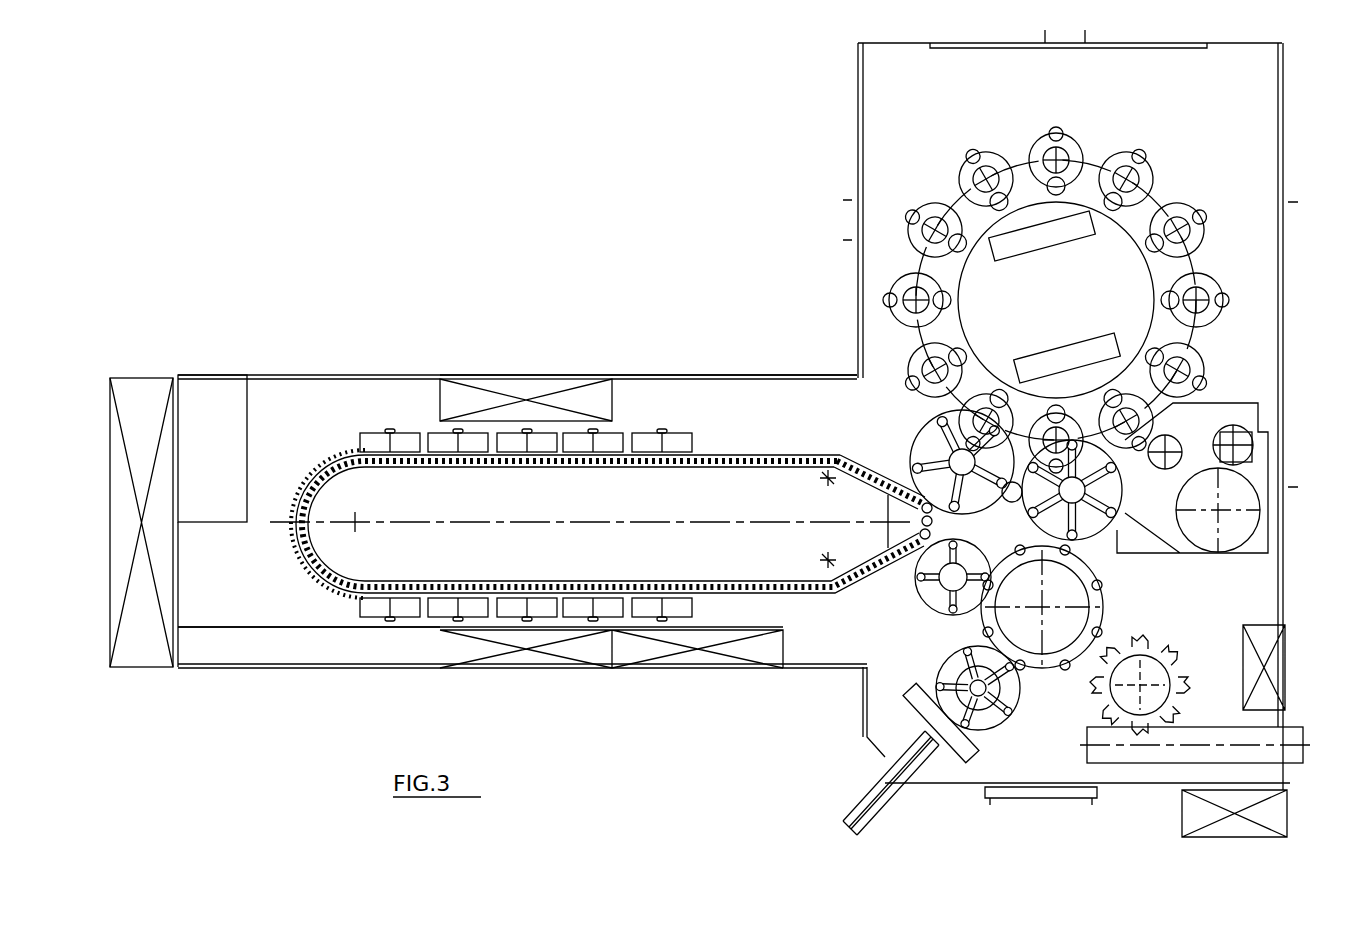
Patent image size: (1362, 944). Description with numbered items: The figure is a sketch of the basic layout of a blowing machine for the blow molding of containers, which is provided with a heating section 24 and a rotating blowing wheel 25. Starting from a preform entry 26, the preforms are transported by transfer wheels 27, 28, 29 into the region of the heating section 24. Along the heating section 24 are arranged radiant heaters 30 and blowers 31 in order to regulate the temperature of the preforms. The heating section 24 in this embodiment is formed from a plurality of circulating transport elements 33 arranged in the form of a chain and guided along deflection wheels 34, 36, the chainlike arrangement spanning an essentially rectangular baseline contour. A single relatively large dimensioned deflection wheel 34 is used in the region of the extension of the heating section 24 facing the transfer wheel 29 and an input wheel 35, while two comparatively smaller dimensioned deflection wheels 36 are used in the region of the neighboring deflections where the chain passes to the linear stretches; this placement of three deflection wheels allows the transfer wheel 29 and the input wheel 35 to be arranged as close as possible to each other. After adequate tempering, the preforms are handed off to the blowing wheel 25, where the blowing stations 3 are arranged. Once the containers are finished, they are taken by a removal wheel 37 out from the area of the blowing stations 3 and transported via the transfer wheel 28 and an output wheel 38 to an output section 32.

The blowing station 3 is at (900, 272).
The heating section 24 is at (650, 412).
The blowing wheel 25 is at (995, 230).
The preform entry 26 is at (890, 790).
The transfer wheel 27 is at (993, 730).
The transfer wheel 28 is at (1042, 668).
The transfer wheel 29 is at (927, 603).
The radiant heater 30 is at (405, 430).
The blower 31 is at (520, 383).
The output section 32 is at (1292, 755).
The transport element 33 is at (333, 590).
The deflection wheel 34 is at (355, 525).
The input wheel 35 is at (933, 415).
The deflection wheel 36 is at (828, 478).
The removal wheel 37 is at (1095, 500).
The output wheel 38 is at (1151, 697).